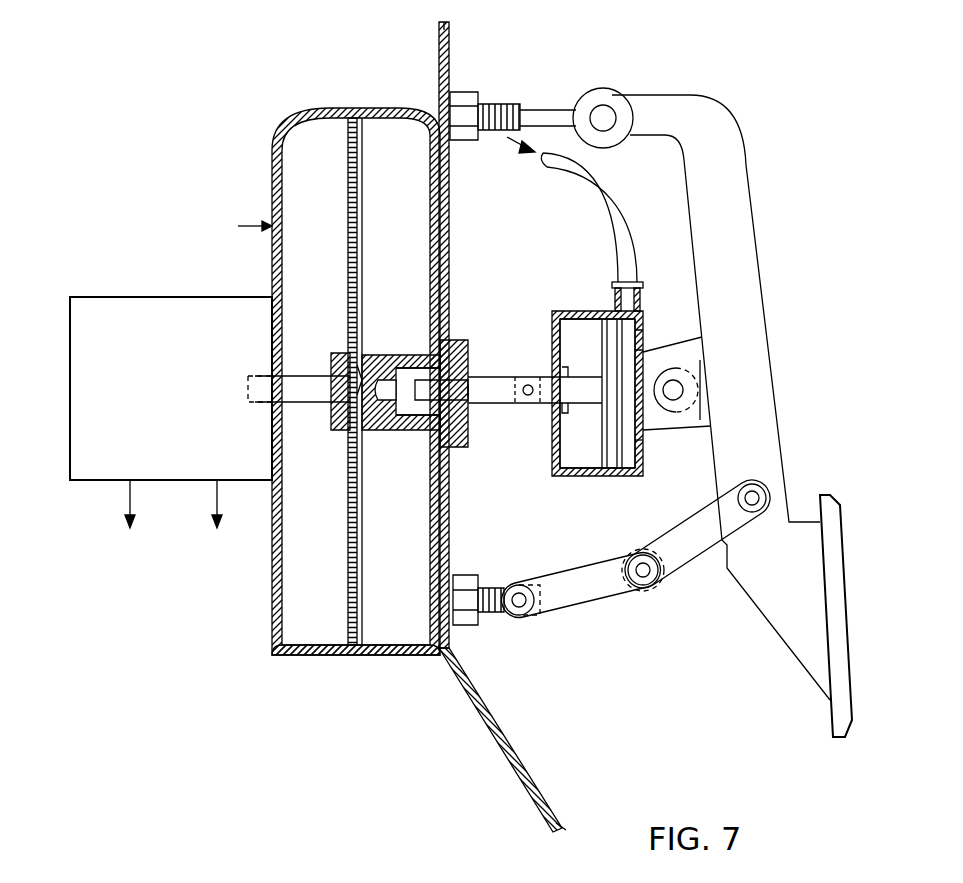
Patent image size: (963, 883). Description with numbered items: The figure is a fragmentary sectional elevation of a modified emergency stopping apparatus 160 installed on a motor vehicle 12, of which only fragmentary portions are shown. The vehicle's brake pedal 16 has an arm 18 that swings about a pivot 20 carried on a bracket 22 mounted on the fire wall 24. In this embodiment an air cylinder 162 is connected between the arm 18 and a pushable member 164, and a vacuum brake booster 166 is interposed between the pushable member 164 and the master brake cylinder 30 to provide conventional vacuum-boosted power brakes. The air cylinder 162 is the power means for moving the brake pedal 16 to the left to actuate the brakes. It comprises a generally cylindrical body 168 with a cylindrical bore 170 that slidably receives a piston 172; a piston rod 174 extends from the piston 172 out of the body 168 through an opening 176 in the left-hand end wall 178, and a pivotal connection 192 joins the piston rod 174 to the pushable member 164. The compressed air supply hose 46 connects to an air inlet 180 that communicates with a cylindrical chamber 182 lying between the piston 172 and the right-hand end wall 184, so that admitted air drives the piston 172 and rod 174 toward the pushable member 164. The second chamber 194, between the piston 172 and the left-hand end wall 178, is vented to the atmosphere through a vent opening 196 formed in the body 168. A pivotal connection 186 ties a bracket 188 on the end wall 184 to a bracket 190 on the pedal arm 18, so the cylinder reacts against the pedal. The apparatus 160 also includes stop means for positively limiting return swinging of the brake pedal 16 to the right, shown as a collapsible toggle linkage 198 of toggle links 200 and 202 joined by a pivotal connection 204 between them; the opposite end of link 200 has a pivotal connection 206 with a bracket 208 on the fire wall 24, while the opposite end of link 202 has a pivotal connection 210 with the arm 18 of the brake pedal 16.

The motor vehicle 12 is at (488, 782).
The brake pedal 16 is at (850, 620).
The arm 18 is at (782, 443).
The pivot 20 is at (620, 100).
The bracket 22 is at (518, 102).
The fire wall 24 is at (449, 62).
The master brake cylinder 30 is at (182, 297).
The compressed air supply hose 46 is at (582, 190).
The modified emergency stopping apparatus 160 is at (574, 708).
The air cylinder 162 is at (591, 483).
The pushable member 164 is at (492, 377).
The vacuum brake booster 166 is at (266, 161).
The cylindrical body 168 is at (592, 330).
The cylindrical bore 170 is at (552, 333).
The piston 172 is at (610, 472).
The piston rod 174 is at (582, 406).
The opening 176 is at (552, 403).
The left-hand end wall 178 is at (552, 328).
The air inlet 180 is at (645, 305).
The cylindrical chamber 182 is at (645, 338).
The right-hand end wall 184 is at (643, 455).
The pivotal connection 186 is at (676, 390).
The bracket 188 is at (700, 355).
The bracket 190 is at (702, 416).
The pivotal connection 192 is at (529, 384).
The second chamber 194 is at (606, 322).
The vent opening 196 is at (573, 478).
The collapsible toggle linkage 198 is at (632, 622).
The toggle link 200 is at (552, 603).
The toggle link 202 is at (666, 586).
The link pivot pin 204 is at (634, 560).
The pivotal connection 206 is at (518, 585).
The bracket 208 is at (488, 616).
The pivotal connection 210 is at (766, 492).